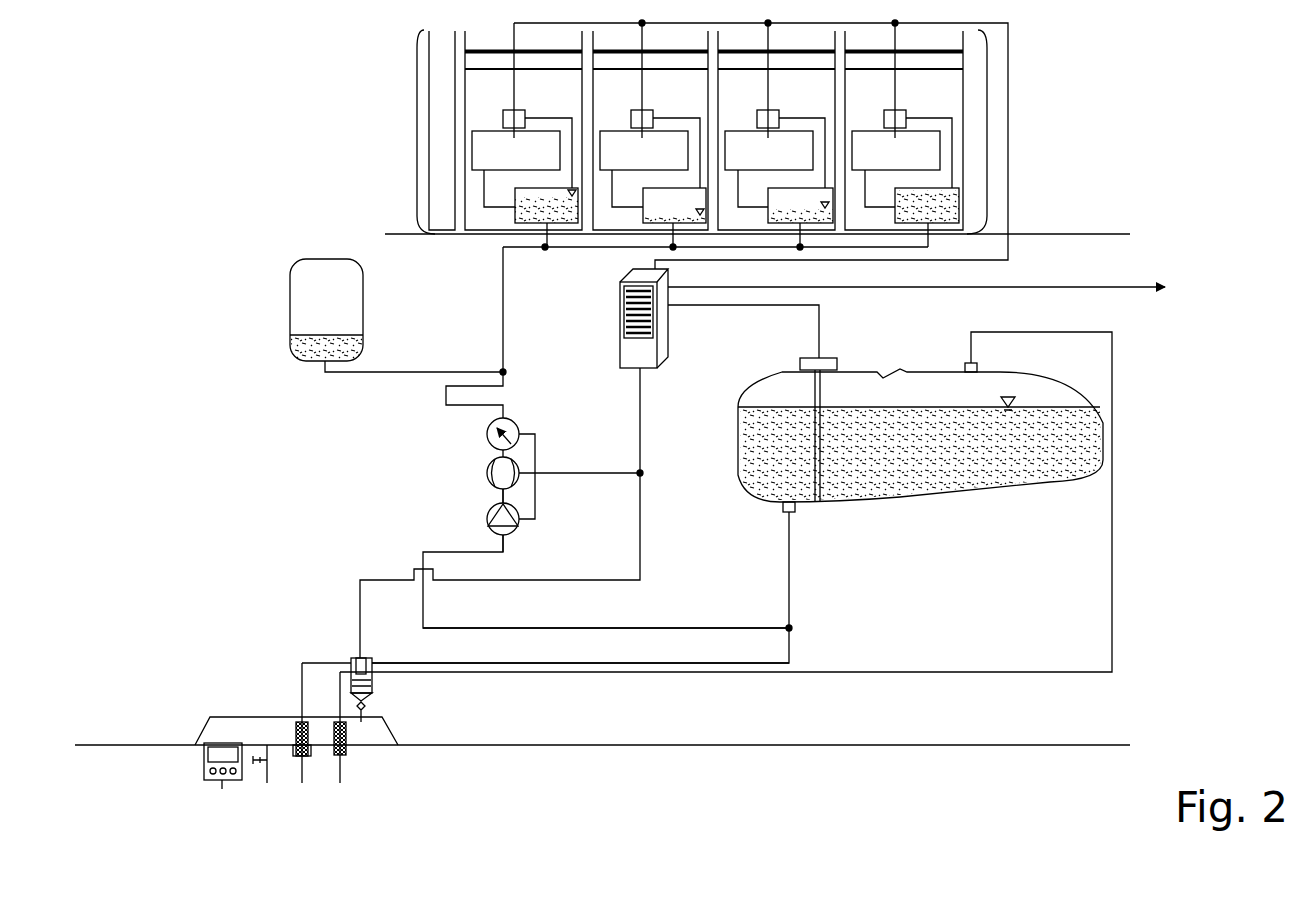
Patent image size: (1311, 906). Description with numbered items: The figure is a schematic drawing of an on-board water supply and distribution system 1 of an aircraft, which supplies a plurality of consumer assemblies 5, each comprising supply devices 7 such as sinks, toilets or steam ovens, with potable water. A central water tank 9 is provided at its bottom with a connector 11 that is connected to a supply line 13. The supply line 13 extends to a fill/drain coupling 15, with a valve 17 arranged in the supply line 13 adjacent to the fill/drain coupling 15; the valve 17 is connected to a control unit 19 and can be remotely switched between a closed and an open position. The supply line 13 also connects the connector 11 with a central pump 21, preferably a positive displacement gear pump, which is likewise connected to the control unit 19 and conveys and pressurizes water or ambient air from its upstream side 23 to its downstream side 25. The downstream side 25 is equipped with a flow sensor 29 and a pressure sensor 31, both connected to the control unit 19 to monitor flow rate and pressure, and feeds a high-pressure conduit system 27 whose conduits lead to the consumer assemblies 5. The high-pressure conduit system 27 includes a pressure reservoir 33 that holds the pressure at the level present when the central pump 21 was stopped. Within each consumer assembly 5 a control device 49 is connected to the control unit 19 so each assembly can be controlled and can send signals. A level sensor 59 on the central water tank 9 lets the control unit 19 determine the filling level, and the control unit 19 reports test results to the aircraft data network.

The water supply and distribution system 1 is at (1095, 167).
The consumer assemblies 5 is at (477, 96).
The supply devices 7 is at (880, 165).
The central water tank 9 is at (1072, 440).
The connector 11 is at (795, 508).
The supply line 13 is at (730, 663).
The fill/drain coupling 15 is at (310, 753).
The valve 17 is at (355, 658).
The control unit 19 is at (628, 353).
The central pump 21 is at (490, 520).
The upstream side 23 is at (495, 537).
The downstream side 25 is at (495, 500).
The high-pressure conduit system 27 is at (443, 288).
The flow sensor 29 is at (490, 458).
The pressure sensor 31 is at (485, 428).
The pressure reservoir 33 is at (300, 303).
The control device 49 is at (503, 118).
The level sensor 59 is at (830, 360).